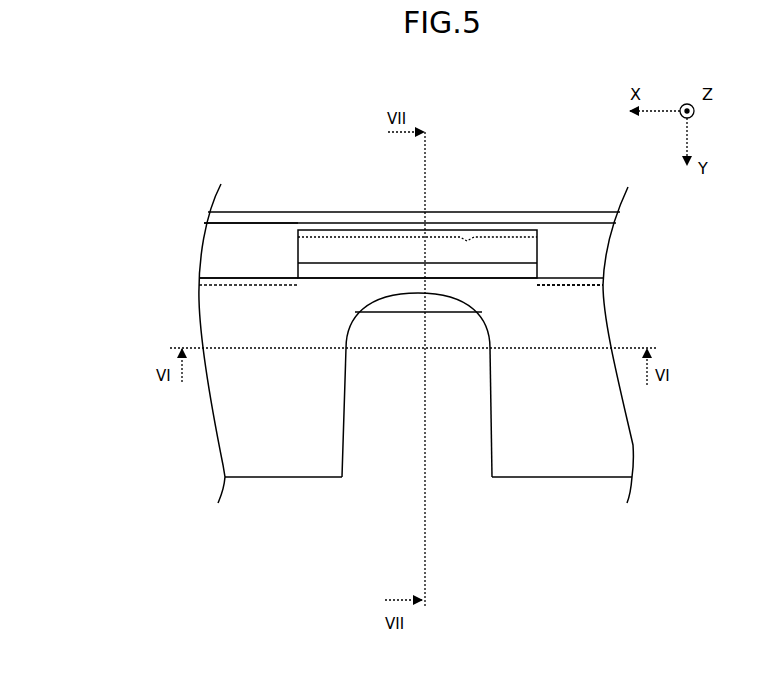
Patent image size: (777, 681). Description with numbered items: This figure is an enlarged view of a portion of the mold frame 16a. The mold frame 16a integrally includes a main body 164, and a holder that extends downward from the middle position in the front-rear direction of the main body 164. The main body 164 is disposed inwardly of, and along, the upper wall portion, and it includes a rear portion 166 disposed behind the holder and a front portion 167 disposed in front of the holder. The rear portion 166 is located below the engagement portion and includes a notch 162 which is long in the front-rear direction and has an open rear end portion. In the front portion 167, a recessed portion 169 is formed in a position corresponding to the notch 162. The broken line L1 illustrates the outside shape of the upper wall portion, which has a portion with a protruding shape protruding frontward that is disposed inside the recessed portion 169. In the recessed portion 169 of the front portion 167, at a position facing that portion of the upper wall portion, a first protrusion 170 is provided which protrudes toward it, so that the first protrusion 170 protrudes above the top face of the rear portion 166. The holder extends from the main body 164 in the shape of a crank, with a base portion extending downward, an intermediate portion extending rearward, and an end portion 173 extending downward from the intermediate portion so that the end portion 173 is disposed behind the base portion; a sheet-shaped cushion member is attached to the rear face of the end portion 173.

The mold frame 16a is at (268, 198).
The notch 162 is at (490, 468).
The main body 164 is at (98, 242).
The rear portion 166 is at (220, 317).
The front portion 167 is at (220, 240).
The recessed portion 169 is at (467, 240).
The first protrusion 170 is at (354, 245).
The end portion 173 is at (437, 302).
The broken line L1 is at (550, 287).